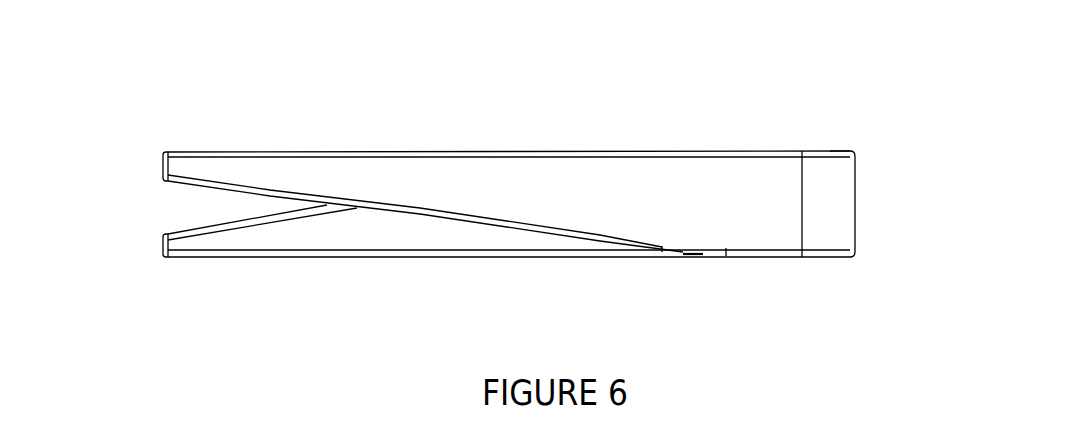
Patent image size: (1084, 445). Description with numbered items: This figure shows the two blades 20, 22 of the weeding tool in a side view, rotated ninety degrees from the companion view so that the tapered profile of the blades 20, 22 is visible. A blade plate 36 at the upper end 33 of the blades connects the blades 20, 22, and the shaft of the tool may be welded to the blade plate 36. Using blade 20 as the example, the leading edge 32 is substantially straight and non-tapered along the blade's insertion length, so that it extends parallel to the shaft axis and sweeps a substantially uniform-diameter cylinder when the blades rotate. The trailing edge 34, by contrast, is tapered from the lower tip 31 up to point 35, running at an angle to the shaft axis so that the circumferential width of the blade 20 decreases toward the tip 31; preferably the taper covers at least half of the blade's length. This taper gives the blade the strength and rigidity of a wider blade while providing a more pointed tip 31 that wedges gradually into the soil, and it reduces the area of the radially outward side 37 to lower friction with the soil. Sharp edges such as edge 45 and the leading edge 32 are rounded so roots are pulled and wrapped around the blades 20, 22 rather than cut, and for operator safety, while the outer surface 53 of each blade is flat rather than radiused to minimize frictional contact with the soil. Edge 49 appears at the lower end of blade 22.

The blade 20 is at (448, 188).
The blade 22 is at (470, 273).
The lower tip 31 is at (163, 153).
The leading edge 32 is at (522, 150).
The upper end 33 is at (855, 150).
The trailing edge 34 is at (485, 227).
The point 35 is at (703, 255).
The blade plate 36 is at (855, 218).
The radially outward side 37 is at (612, 178).
The rounded edge 45 is at (280, 258).
The free end of lower arm 49 is at (162, 257).
The outer surface 53 is at (825, 180).